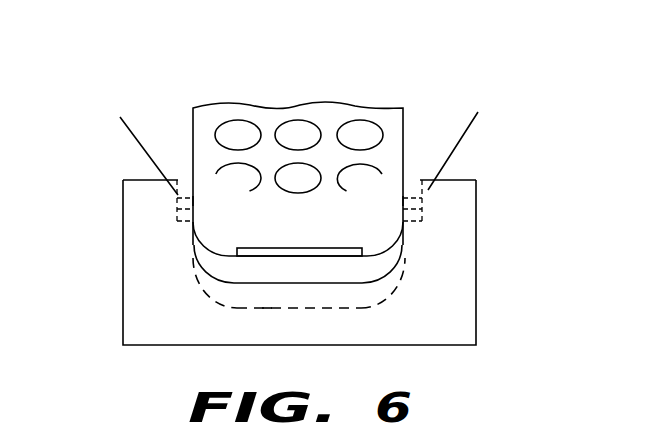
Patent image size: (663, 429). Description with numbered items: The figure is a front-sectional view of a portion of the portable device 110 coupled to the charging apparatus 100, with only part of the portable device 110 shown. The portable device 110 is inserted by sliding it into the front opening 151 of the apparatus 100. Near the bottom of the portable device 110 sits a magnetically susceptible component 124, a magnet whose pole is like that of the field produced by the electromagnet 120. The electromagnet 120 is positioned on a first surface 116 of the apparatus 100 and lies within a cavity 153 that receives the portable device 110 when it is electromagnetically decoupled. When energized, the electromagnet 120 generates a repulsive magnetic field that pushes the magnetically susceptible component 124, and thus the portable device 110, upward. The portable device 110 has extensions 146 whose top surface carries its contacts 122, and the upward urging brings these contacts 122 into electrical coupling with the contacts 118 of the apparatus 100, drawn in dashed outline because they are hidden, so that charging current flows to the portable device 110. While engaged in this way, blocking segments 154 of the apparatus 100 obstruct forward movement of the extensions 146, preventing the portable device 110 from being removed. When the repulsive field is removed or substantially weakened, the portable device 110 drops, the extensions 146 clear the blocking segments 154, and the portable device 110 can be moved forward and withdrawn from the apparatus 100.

The apparatus 100 is at (487, 298).
The portable device 110 is at (166, 86).
The first surface 116 is at (268, 311).
The contacts 118 is at (178, 182).
The electromagnet 120 is at (287, 306).
The contacts 122 is at (193, 200).
The magnetically susceptible component 124 is at (301, 246).
The extensions 146 is at (176, 220).
The front opening 151 is at (225, 268).
The cavity 153 is at (215, 298).
The blocking segments 154 is at (127, 190).